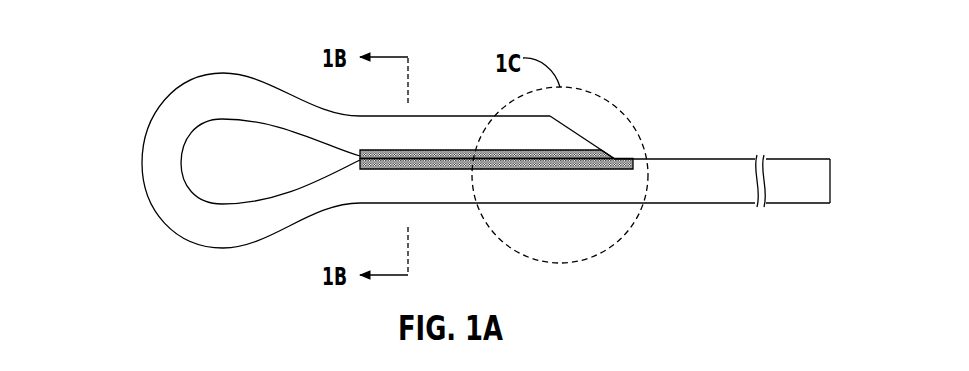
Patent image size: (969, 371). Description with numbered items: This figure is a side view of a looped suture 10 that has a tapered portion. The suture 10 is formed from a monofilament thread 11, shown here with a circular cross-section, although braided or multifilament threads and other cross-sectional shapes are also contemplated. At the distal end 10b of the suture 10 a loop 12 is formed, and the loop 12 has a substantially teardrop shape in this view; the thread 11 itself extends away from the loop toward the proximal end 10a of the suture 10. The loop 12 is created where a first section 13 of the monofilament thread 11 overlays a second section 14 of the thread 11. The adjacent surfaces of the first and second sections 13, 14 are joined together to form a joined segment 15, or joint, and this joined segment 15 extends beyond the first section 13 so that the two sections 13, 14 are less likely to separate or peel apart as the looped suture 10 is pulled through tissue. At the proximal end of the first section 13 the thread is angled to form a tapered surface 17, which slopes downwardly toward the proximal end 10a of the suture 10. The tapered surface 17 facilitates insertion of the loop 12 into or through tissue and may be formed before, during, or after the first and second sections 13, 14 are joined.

The looped suture 10 is at (194, 40).
The proximal end 10a is at (790, 203).
The distal end 10b is at (507, 203).
The monofilament thread 11 is at (697, 159).
The loop 12 is at (152, 167).
The first section 13 is at (412, 132).
The second section 14 is at (423, 190).
The joined segment 15 is at (413, 166).
The tapered surface 17 is at (582, 134).